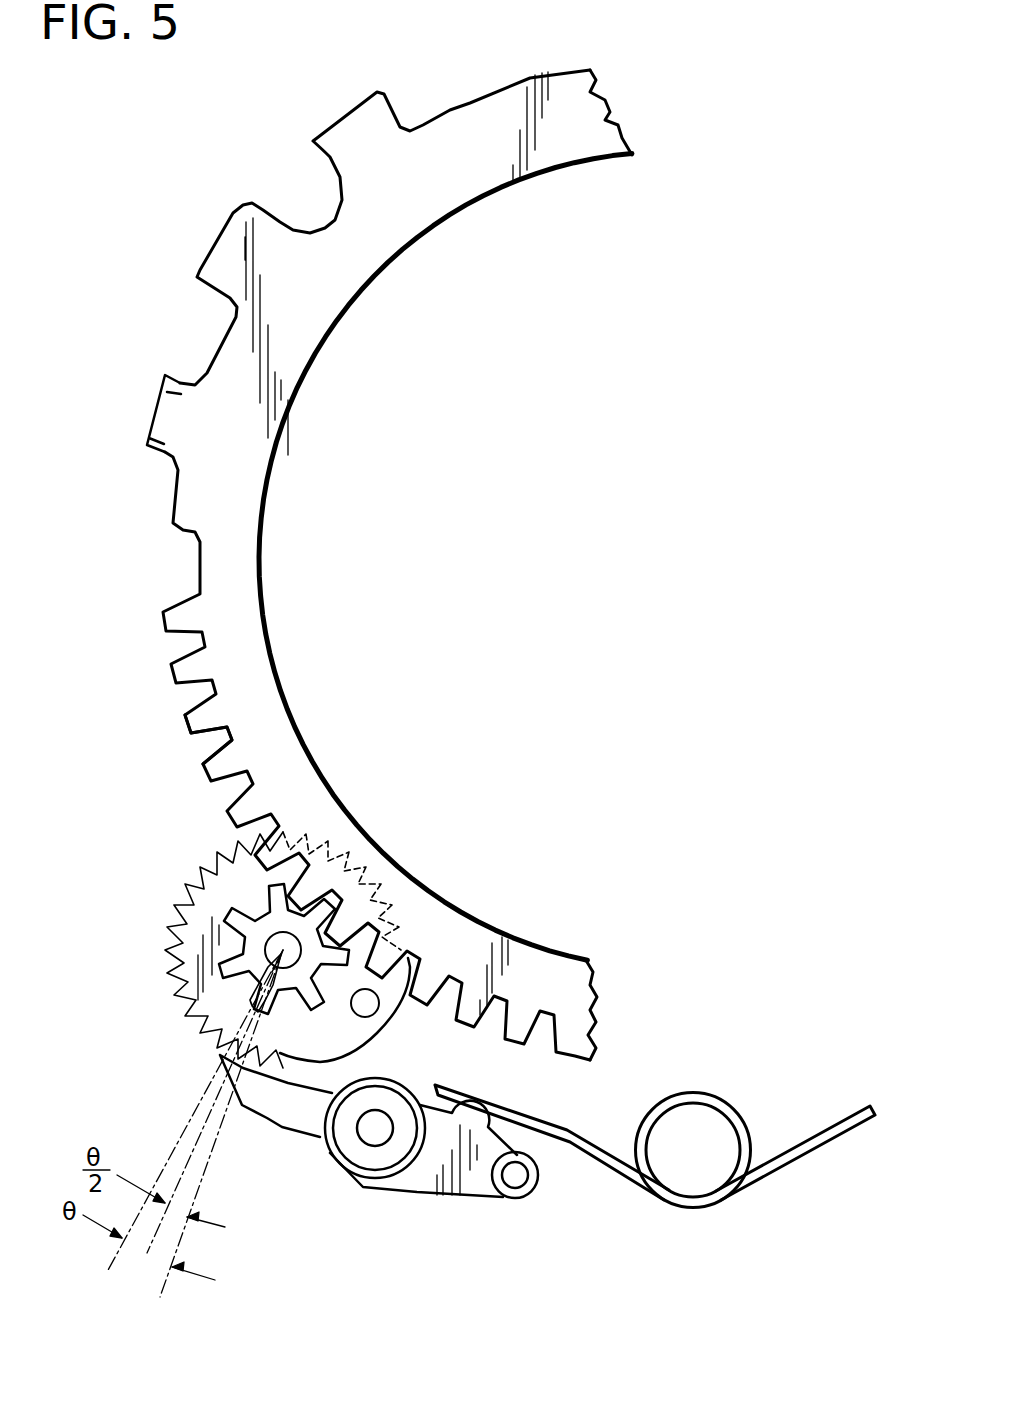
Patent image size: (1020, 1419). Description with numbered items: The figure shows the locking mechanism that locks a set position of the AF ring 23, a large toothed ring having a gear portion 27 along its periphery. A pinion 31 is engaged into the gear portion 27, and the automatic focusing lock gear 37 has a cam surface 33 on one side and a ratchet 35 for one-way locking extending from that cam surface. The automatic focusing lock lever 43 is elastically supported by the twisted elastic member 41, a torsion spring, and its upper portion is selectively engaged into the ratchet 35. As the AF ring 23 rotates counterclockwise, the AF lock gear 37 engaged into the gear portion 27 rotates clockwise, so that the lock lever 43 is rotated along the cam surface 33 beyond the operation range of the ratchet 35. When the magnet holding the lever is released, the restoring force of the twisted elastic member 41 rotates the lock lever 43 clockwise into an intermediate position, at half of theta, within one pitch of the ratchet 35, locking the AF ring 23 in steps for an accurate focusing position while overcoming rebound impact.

The AF ring 23 is at (205, 570).
The gear portion 27 is at (200, 715).
The pinion 31 is at (233, 912).
The cam surface 33 is at (390, 1028).
The ratchet 35 is at (175, 968).
The automatic focusing lock gear 37 is at (198, 938).
The twisted elastic member 41 is at (788, 1155).
The automatic focusing lock lever 43 is at (288, 1108).